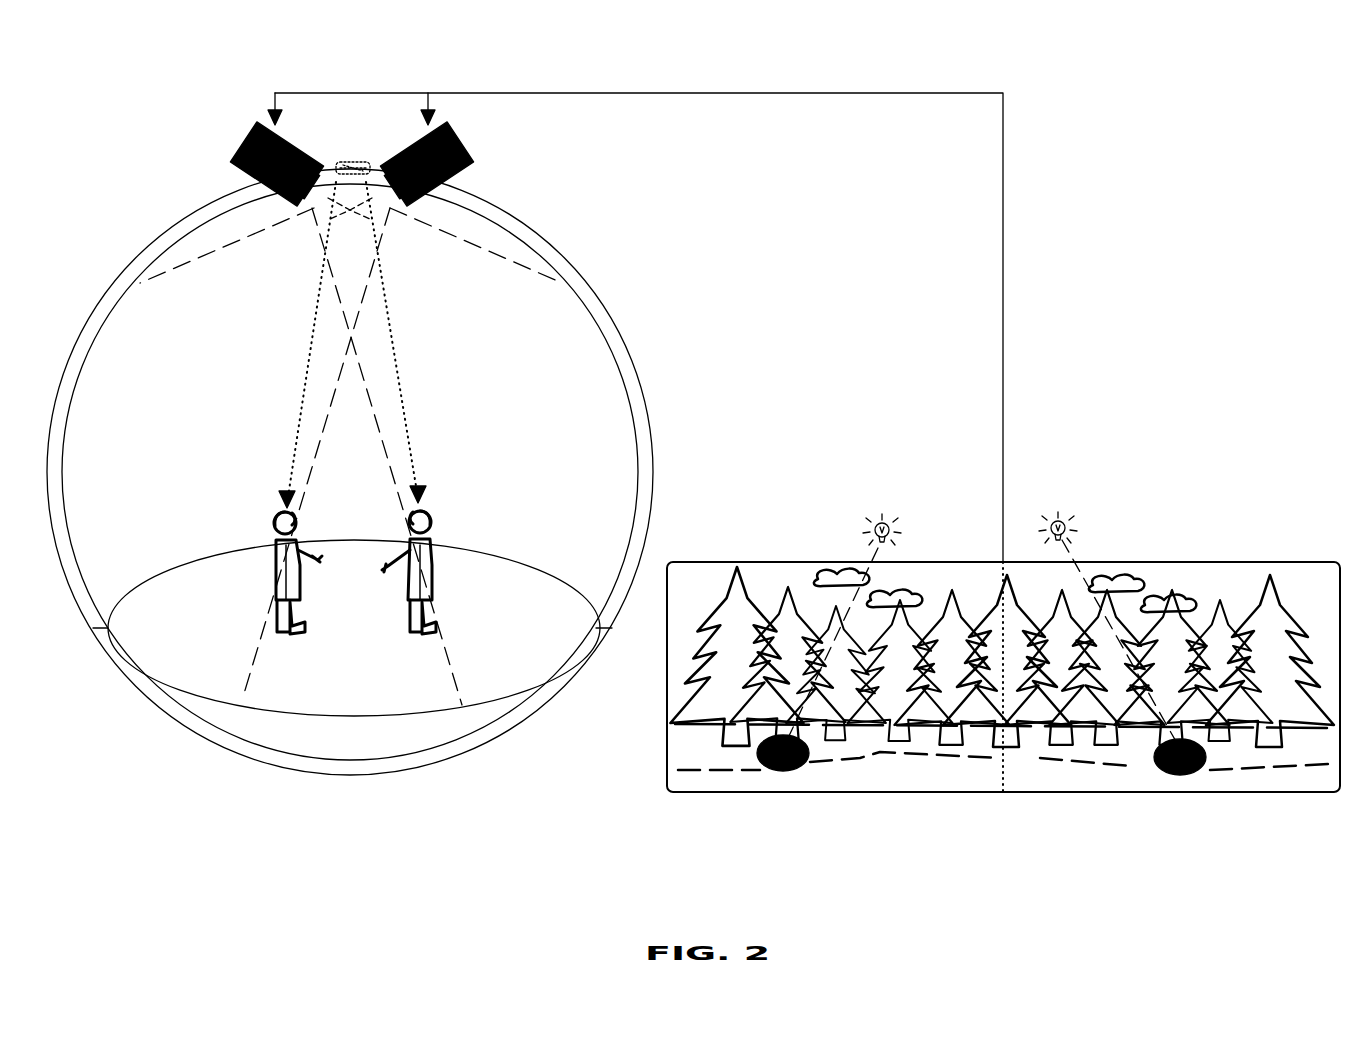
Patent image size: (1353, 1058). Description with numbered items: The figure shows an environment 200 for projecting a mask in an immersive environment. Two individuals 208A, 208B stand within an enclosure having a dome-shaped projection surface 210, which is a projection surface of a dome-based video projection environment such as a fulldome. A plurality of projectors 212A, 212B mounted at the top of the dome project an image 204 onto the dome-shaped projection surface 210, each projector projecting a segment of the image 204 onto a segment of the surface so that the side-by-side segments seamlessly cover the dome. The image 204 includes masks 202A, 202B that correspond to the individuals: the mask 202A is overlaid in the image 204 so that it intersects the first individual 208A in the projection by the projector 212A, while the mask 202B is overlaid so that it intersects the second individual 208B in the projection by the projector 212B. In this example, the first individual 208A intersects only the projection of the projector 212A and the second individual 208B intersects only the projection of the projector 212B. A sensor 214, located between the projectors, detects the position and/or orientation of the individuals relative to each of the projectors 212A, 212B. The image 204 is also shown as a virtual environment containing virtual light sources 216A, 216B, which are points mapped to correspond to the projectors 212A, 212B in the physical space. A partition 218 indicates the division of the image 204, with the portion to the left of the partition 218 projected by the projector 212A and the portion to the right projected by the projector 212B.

The environment 200 is at (1305, 147).
The dome-shaped projection surface 210 is at (64, 410).
The projector 212A is at (456, 152).
The projector 212B is at (248, 152).
The sensor 214 is at (352, 160).
The mask 202A is at (534, 664).
The mask 202B is at (829, 673).
The individual 208A is at (272, 596).
The individual 208B is at (438, 580).
The image 204 is at (1003, 677).
The virtual light source 216A is at (872, 516).
The virtual light source 216B is at (1070, 540).
The partition 218 is at (1005, 566).